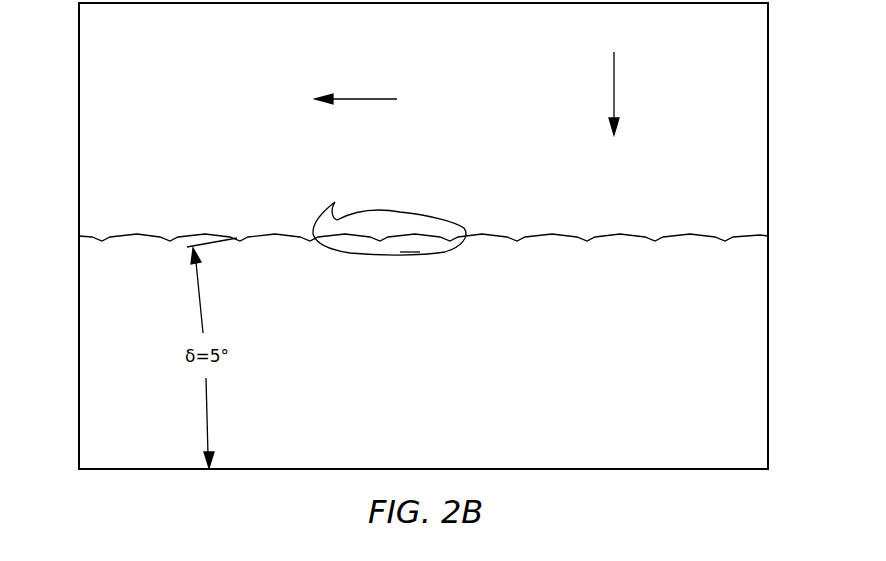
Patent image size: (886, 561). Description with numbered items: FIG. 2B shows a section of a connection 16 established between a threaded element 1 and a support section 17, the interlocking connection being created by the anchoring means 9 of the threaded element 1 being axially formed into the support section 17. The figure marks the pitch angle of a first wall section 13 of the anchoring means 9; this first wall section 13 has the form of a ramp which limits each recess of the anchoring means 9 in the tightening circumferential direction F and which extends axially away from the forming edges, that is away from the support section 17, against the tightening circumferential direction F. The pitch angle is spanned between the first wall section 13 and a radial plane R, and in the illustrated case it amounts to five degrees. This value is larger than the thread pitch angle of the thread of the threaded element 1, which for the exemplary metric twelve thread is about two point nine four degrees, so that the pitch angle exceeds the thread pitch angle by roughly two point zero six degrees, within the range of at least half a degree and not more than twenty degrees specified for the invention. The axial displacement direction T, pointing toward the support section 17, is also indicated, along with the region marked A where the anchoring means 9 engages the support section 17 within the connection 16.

The threaded element 1 is at (769, 131).
The support section 17 is at (769, 345).
The connection 16 is at (58, 338).
The first wall section 13 is at (135, 233).
The anchoring means 9 is at (480, 226).
The area A is at (408, 253).
The radial plane R is at (150, 471).
The tightening circumferential direction F is at (370, 99).
The axial displacement direction T is at (615, 76).